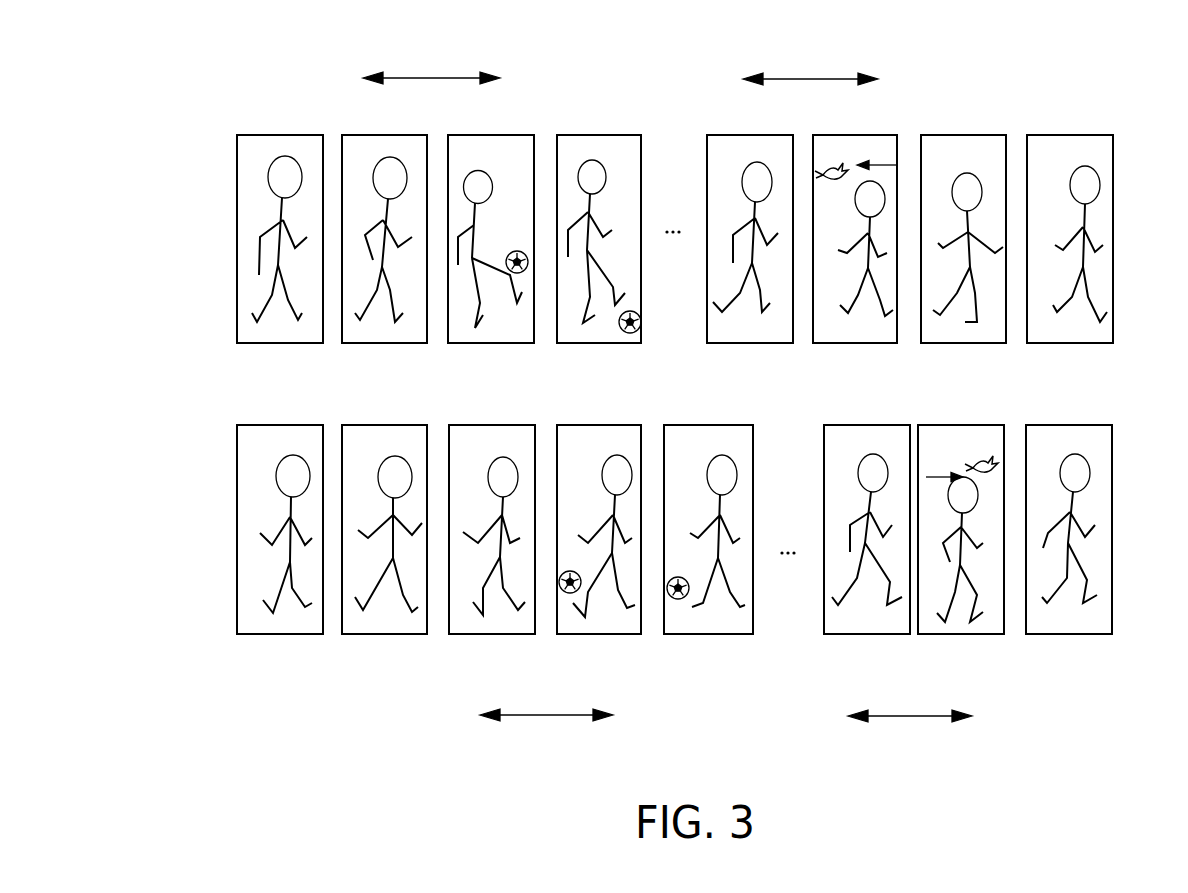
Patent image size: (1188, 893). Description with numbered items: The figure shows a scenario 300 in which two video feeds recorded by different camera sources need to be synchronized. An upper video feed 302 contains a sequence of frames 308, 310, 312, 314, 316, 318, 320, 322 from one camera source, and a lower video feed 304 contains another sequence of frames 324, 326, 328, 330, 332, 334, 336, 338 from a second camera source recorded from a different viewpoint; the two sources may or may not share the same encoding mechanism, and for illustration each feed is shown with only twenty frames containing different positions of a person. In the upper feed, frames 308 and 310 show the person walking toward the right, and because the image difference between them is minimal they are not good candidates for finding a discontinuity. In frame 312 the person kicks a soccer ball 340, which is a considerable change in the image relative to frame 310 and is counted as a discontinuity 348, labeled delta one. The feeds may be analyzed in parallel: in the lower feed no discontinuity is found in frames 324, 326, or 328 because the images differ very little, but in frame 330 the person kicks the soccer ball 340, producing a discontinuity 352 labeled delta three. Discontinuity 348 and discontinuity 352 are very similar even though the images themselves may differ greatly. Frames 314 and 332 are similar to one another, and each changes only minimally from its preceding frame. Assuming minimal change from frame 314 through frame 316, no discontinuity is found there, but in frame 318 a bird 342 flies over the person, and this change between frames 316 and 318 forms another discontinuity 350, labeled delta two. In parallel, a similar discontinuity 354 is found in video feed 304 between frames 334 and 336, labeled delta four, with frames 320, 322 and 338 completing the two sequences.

The scenario 300 is at (1124, 88).
The video feed 302 is at (212, 104).
The video feed 304 is at (212, 395).
The frame 308 is at (289, 145).
The frame 310 is at (386, 345).
The frame 312 is at (510, 266).
The frame 314 is at (600, 345).
The frame 316 is at (752, 345).
The frame 318 is at (855, 249).
The frame 320 is at (965, 345).
The frame 322 is at (1070, 345).
The frame 324 is at (280, 636).
The frame 326 is at (385, 636).
The frame 328 is at (500, 636).
The frame 330 is at (599, 556).
The frame 332 is at (708, 636).
The frame 334 is at (867, 636).
The frame 336 is at (961, 556).
The frame 338 is at (1068, 636).
The soccer ball 340 is at (528, 281).
The bird 342 is at (846, 152).
The discontinuity 348 is at (433, 82).
The discontinuity 350 is at (812, 82).
The discontinuity 352 is at (548, 718).
The discontinuity 354 is at (912, 719).